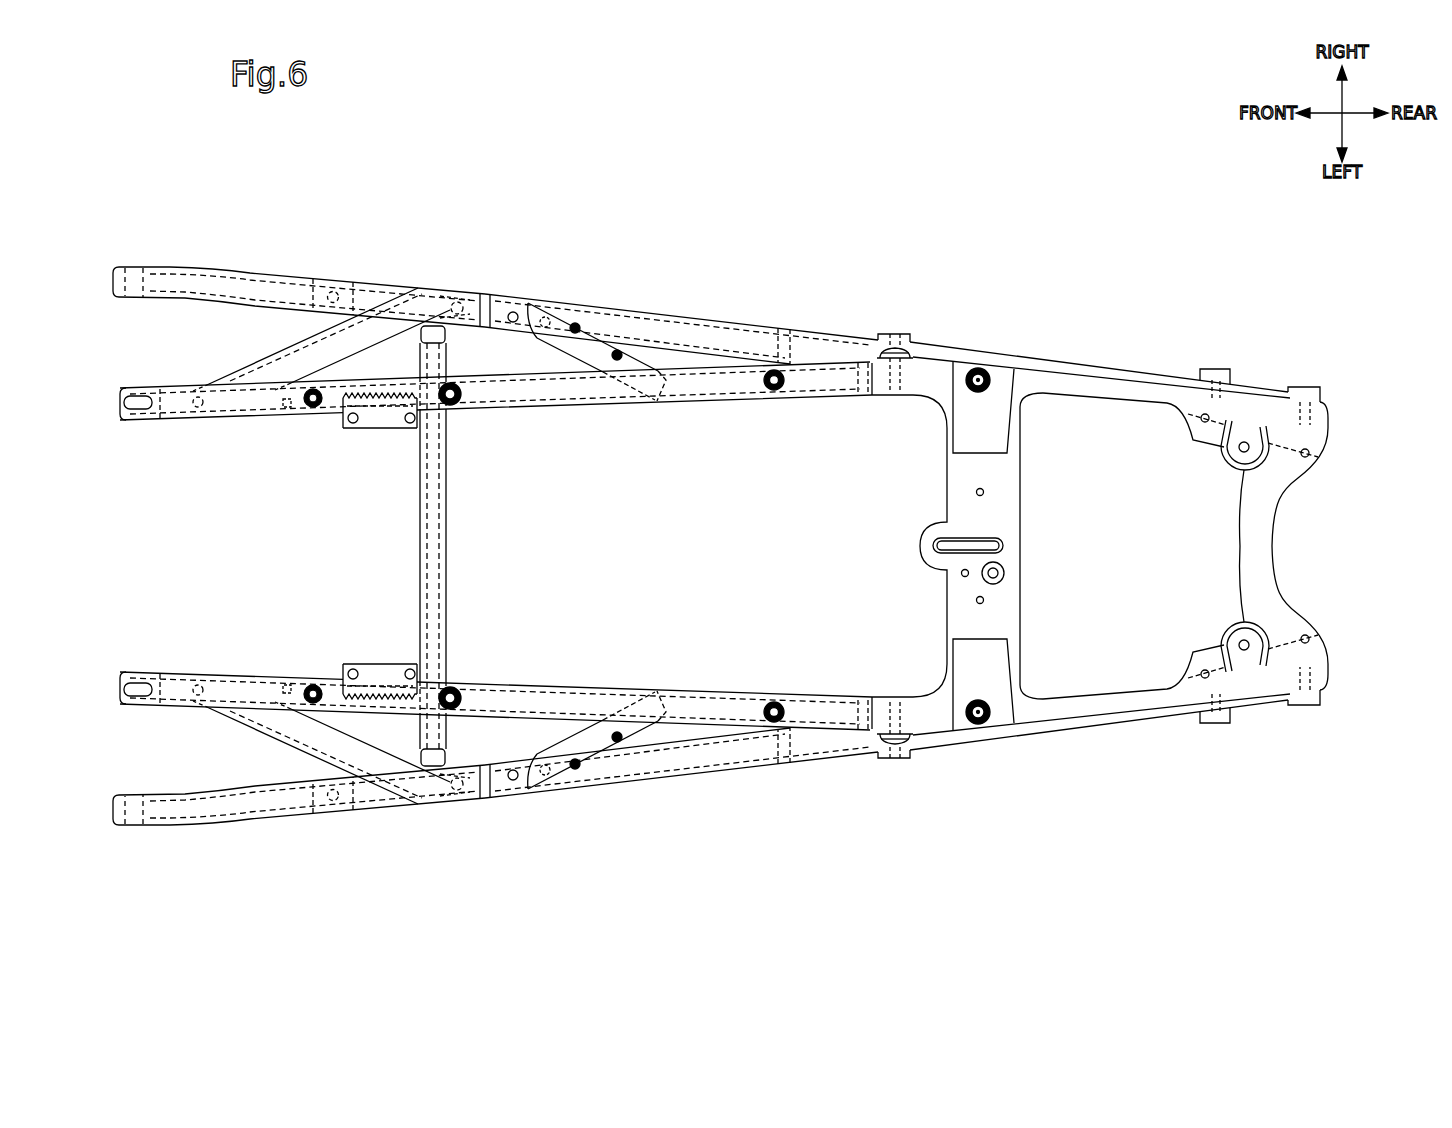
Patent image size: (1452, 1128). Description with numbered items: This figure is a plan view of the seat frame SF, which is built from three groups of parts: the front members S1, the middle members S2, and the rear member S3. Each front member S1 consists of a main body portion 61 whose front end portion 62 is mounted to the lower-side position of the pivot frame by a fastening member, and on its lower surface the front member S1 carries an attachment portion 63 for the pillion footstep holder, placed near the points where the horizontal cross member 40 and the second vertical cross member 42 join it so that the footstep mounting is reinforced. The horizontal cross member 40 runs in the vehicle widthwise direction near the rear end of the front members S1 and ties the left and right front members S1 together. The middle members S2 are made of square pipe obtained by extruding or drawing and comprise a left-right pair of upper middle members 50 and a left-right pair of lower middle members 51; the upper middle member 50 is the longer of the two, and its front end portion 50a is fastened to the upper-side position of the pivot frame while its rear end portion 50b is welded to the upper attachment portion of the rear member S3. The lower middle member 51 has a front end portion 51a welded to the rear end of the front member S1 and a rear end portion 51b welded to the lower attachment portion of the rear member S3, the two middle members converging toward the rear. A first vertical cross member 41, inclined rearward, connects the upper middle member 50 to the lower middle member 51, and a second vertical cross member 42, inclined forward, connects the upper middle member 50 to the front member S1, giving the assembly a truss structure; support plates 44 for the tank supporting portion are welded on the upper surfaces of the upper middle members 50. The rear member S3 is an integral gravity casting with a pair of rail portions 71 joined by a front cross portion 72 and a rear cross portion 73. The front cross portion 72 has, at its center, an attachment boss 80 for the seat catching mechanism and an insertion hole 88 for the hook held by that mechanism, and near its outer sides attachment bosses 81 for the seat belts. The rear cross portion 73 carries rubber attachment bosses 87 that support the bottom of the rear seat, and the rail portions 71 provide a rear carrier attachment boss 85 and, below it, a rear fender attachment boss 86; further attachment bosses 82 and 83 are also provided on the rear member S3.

The seat frame SF is at (913, 222).
The front member S1 is at (230, 268).
The middle members S2 is at (715, 223).
The rear member S3 is at (1112, 361).
The horizontal cross member 40 is at (430, 522).
The first vertical cross member 41 is at (597, 318).
The second vertical cross member 42 is at (303, 355).
The support plate 44 is at (373, 416).
The upper middle member 50 is at (712, 380).
The front end portion 50a is at (125, 385).
The rear end portion 50b is at (850, 388).
The lower middle member 51 is at (659, 323).
The front end portion 51a is at (505, 305).
The rear end portion 51b is at (755, 322).
The main body portion 61 is at (177, 272).
The front end portion 62 is at (115, 277).
The attachment portion for the pillion footstep holder 63 is at (352, 292).
The rail portion 71 is at (1130, 394).
The front cross portion 72 is at (1018, 541).
The rear cross portion 73 is at (1250, 541).
The attachment boss 80 is at (1005, 573).
The attachment boss 81 is at (980, 370).
The attachment boss 82 is at (1208, 369).
The attachment boss 83 is at (1293, 388).
The rear carrier attachment boss 85 is at (886, 336).
The rear fender attachment boss 86 is at (905, 336).
The rubber attachment boss 87 is at (1228, 447).
The insertion hole 88 is at (977, 545).